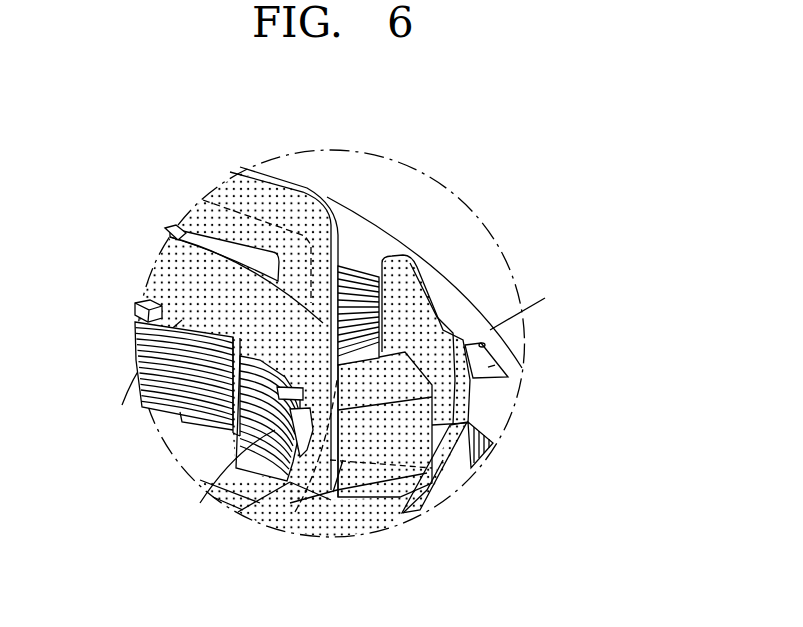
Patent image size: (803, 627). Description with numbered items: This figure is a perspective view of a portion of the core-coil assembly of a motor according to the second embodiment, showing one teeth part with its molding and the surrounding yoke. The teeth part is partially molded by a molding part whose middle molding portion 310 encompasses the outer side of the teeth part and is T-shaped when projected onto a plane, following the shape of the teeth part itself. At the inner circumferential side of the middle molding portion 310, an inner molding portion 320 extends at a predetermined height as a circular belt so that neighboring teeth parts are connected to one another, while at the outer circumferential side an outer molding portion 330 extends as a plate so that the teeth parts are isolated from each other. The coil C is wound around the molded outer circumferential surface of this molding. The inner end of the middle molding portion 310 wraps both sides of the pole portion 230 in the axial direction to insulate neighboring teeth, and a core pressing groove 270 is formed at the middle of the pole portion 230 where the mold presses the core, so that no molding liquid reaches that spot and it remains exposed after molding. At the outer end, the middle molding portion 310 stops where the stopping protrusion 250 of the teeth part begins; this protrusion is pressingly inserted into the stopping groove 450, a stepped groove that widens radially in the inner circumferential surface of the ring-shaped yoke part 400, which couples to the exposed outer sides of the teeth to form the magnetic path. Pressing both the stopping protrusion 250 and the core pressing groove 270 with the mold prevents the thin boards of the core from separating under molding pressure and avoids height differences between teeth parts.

The inner molding portion 320 is at (198, 275).
The outer molding portion 330 is at (287, 204).
The core pressing groove 270 is at (280, 396).
The pole portion 230 is at (235, 448).
The middle molding portion 310 is at (347, 517).
The yoke part 400 is at (490, 408).
The stopping protrusion 250 is at (500, 360).
The stopping groove 450 is at (480, 340).
The coil C is at (338, 365).